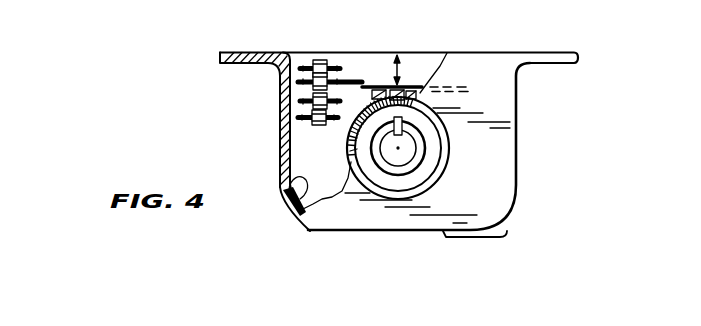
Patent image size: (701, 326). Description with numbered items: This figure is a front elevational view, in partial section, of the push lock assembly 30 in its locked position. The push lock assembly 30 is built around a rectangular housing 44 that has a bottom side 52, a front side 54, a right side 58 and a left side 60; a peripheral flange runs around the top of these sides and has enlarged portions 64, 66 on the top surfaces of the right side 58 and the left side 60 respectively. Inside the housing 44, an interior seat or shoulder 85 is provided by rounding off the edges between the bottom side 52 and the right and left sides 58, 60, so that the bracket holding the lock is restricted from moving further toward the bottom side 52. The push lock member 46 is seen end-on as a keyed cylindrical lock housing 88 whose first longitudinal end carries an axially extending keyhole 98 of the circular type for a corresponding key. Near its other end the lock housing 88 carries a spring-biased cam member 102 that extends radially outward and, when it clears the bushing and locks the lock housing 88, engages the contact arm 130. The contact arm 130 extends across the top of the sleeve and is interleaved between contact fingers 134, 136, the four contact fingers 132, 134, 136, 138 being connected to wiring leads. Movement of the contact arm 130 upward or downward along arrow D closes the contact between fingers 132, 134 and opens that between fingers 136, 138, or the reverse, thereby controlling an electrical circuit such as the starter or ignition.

The push lock assembly 30 is at (143, 75).
The enlarged portion of flange 64 is at (547, 53).
The enlarged portion of flange 66 is at (234, 51).
The right side 58 is at (520, 109).
The left side 60 is at (280, 141).
The bottom side 52 is at (502, 235).
The interior seat or shoulder 85 is at (285, 196).
The contact finger 132 is at (307, 61).
The contact finger 134 is at (337, 79).
The contact finger 136 is at (298, 99).
The contact finger 138 is at (298, 118).
The engagement or cam member 102 is at (400, 92).
The contact arm 130 is at (418, 90).
The arrow D is at (394, 57).
The push lock member 46 is at (447, 174).
The housing 44 is at (521, 147).
The keyed cylindrical lock housing 88 is at (428, 150).
The keyhole 98 is at (400, 147).
The front side 54 is at (495, 180).